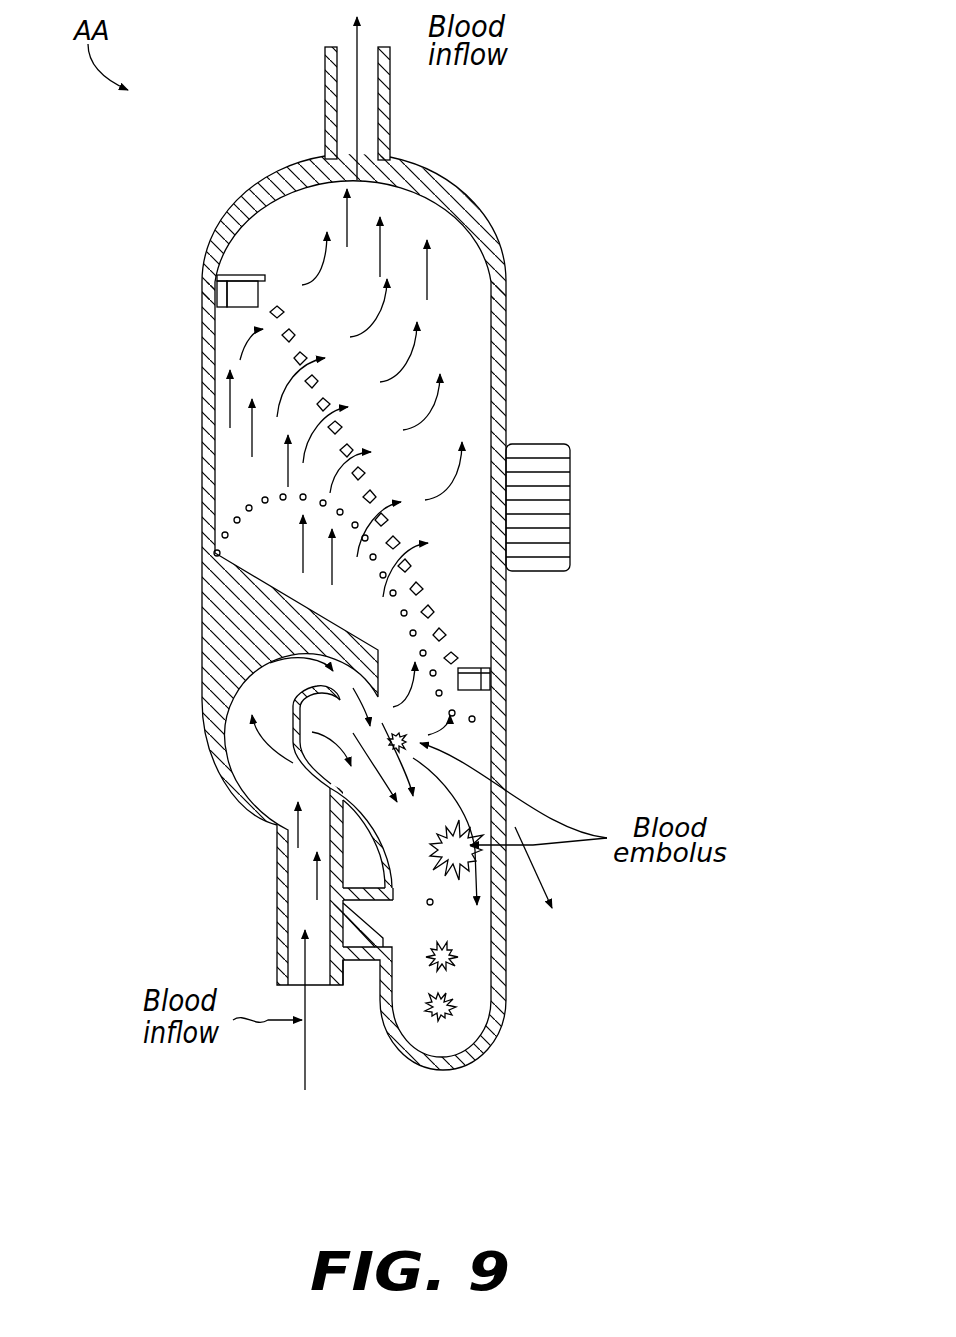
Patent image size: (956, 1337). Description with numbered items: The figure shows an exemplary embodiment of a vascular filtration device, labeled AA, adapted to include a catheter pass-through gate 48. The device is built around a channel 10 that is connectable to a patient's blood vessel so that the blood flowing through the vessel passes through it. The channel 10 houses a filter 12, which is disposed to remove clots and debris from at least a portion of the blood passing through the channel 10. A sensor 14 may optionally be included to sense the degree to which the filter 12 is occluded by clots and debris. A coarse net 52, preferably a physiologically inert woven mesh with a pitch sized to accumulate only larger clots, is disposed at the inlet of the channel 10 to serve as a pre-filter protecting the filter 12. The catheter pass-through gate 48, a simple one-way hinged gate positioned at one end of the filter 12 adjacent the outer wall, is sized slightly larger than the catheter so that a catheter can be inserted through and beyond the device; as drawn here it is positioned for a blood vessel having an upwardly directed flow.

The channel 10 is at (520, 249).
The filter 12 is at (277, 351).
The sensor 14 is at (572, 506).
The catheter pass-through gate 48 is at (236, 275).
The coarse net 52 is at (257, 494).